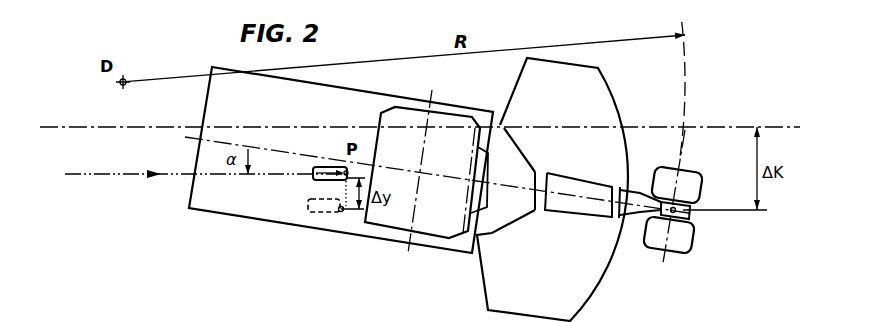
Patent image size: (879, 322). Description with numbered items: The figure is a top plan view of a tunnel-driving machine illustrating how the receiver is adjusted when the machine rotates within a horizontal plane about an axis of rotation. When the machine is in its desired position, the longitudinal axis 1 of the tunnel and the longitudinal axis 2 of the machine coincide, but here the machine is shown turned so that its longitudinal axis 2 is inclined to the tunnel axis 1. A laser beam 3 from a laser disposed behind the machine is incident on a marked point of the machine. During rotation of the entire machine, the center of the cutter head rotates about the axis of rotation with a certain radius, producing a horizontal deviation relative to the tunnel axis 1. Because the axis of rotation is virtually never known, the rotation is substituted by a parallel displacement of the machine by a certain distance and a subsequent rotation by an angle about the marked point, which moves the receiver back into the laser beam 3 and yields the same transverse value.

The longitudinal axis of the tunnel 1 is at (75, 127).
The longitudinal axis of the machine 2 is at (707, 218).
The laser beam 3 is at (80, 174).